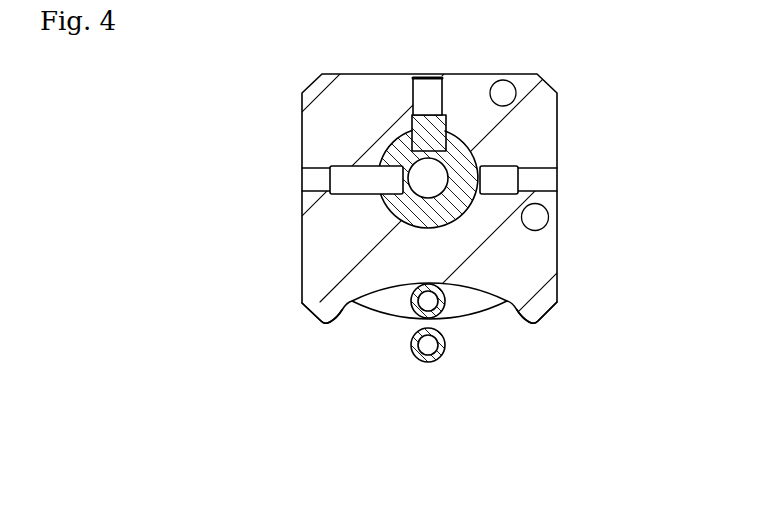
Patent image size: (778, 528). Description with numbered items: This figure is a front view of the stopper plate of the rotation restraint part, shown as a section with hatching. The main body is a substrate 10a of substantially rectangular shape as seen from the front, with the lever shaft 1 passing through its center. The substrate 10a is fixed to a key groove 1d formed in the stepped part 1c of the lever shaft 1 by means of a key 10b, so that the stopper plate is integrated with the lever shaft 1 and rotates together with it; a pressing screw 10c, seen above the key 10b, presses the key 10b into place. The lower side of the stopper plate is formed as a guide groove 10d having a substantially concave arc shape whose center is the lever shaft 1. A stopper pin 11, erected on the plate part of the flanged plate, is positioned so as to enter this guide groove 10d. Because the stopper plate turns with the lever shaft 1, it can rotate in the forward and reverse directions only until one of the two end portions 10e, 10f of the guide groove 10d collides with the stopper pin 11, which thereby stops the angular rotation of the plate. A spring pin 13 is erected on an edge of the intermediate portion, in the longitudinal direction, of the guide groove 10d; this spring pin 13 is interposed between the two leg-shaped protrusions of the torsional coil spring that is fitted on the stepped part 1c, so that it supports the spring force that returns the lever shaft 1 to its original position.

The lever shaft 1 is at (395, 217).
The stepped part 1c is at (498, 305).
The key groove 1d is at (400, 147).
The substrate 10a is at (533, 270).
The key 10b is at (447, 117).
The pressing screw 10c is at (432, 88).
The guide groove 10d is at (463, 328).
The end portion of guide groove 10e is at (517, 323).
The end portion of guide groove 10f is at (340, 318).
The stopper pin 11 is at (418, 359).
The spring pin 13 is at (415, 313).